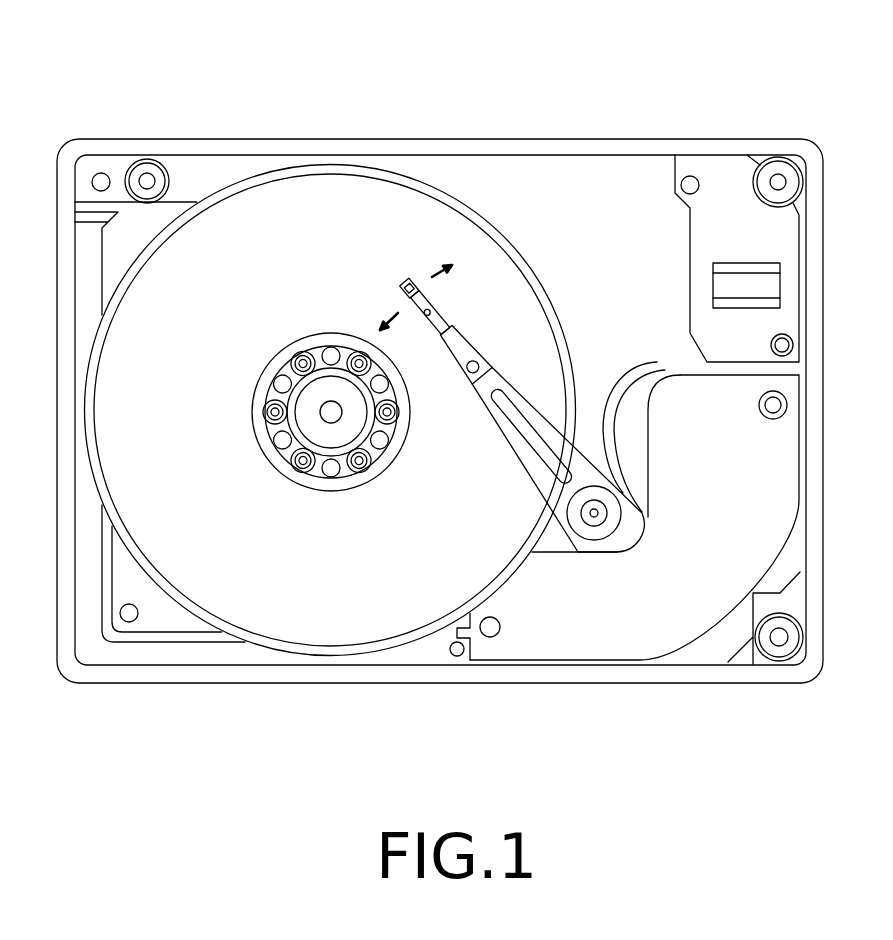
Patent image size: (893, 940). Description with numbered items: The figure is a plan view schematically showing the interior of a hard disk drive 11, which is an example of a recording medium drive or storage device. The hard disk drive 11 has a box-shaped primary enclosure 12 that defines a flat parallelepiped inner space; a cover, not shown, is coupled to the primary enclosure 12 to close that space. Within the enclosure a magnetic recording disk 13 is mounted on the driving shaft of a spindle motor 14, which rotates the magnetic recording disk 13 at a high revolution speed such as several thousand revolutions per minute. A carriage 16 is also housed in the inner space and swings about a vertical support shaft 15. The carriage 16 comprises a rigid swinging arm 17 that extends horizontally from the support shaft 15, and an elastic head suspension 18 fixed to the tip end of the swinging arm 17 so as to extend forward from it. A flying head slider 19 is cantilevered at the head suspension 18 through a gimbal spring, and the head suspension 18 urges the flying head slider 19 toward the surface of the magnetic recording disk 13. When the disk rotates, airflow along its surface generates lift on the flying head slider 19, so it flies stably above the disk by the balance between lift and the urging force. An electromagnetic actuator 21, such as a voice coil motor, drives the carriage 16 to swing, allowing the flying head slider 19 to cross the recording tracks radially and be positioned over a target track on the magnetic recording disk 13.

The hard disk drive 11 is at (433, 94).
The primary enclosure 12 is at (323, 683).
The magnetic recording disk 13 is at (565, 290).
The spindle motor 14 is at (302, 420).
The vertical support shaft 15 is at (598, 515).
The carriage 16 is at (490, 434).
The swinging arm 17 is at (508, 443).
The head suspension 18 is at (451, 308).
The flying head slider 19 is at (402, 292).
The electromagnetic actuator 21 is at (714, 643).